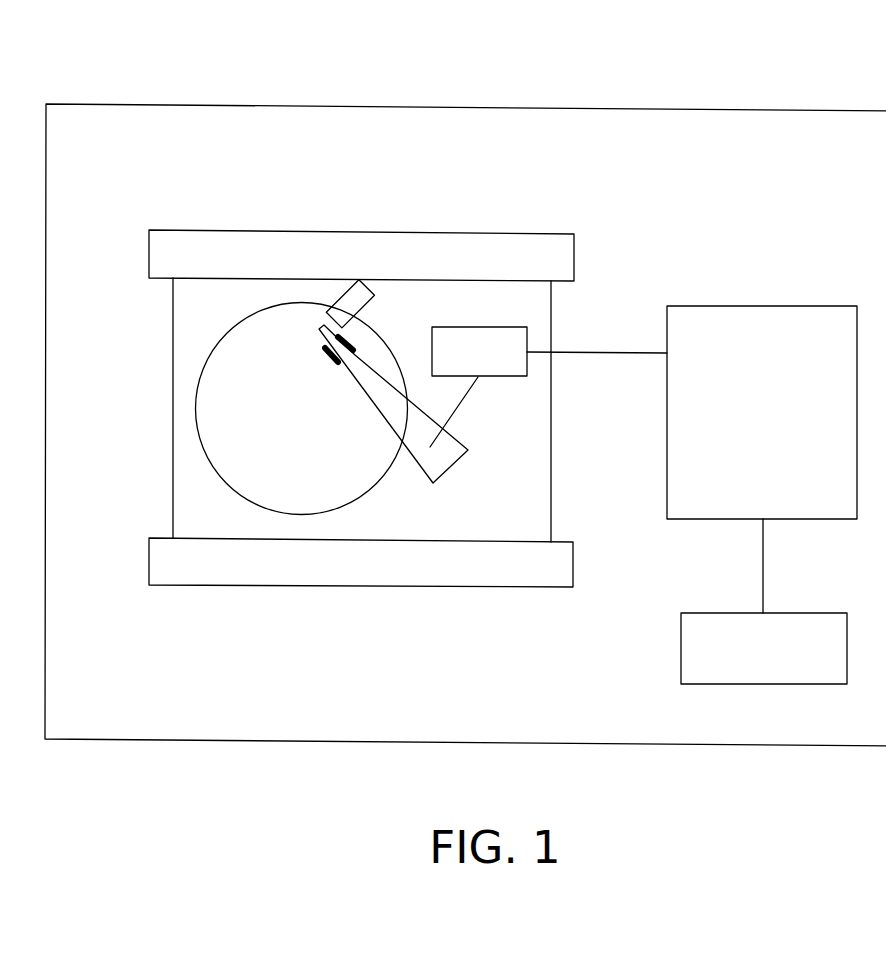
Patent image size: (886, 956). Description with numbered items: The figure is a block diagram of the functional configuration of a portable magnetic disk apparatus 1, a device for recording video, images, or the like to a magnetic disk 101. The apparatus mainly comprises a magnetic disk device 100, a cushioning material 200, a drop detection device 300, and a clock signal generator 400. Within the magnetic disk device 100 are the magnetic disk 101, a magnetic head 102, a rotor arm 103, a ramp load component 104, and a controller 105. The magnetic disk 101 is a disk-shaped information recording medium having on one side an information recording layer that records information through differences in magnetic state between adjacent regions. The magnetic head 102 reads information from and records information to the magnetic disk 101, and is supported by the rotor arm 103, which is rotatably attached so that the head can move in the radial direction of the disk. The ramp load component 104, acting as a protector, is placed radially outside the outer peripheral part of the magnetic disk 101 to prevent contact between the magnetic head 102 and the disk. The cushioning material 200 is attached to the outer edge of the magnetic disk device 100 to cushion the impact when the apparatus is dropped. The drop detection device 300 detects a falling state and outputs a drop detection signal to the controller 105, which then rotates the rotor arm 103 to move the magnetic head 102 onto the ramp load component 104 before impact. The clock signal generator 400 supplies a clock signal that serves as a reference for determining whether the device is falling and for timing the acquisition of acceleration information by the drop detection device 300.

The portable magnetic disk apparatus 1 is at (123, 103).
The magnetic disk device 100 is at (457, 210).
The magnetic disk 101 is at (245, 432).
The magnetic head 102 is at (310, 363).
The rotor arm 103 is at (388, 410).
The ramp load component 104 is at (362, 285).
The controller 105 is at (495, 353).
The cushioning material 200 is at (542, 257).
The drop detection device 300 is at (766, 342).
The clock signal generator 400 is at (797, 633).